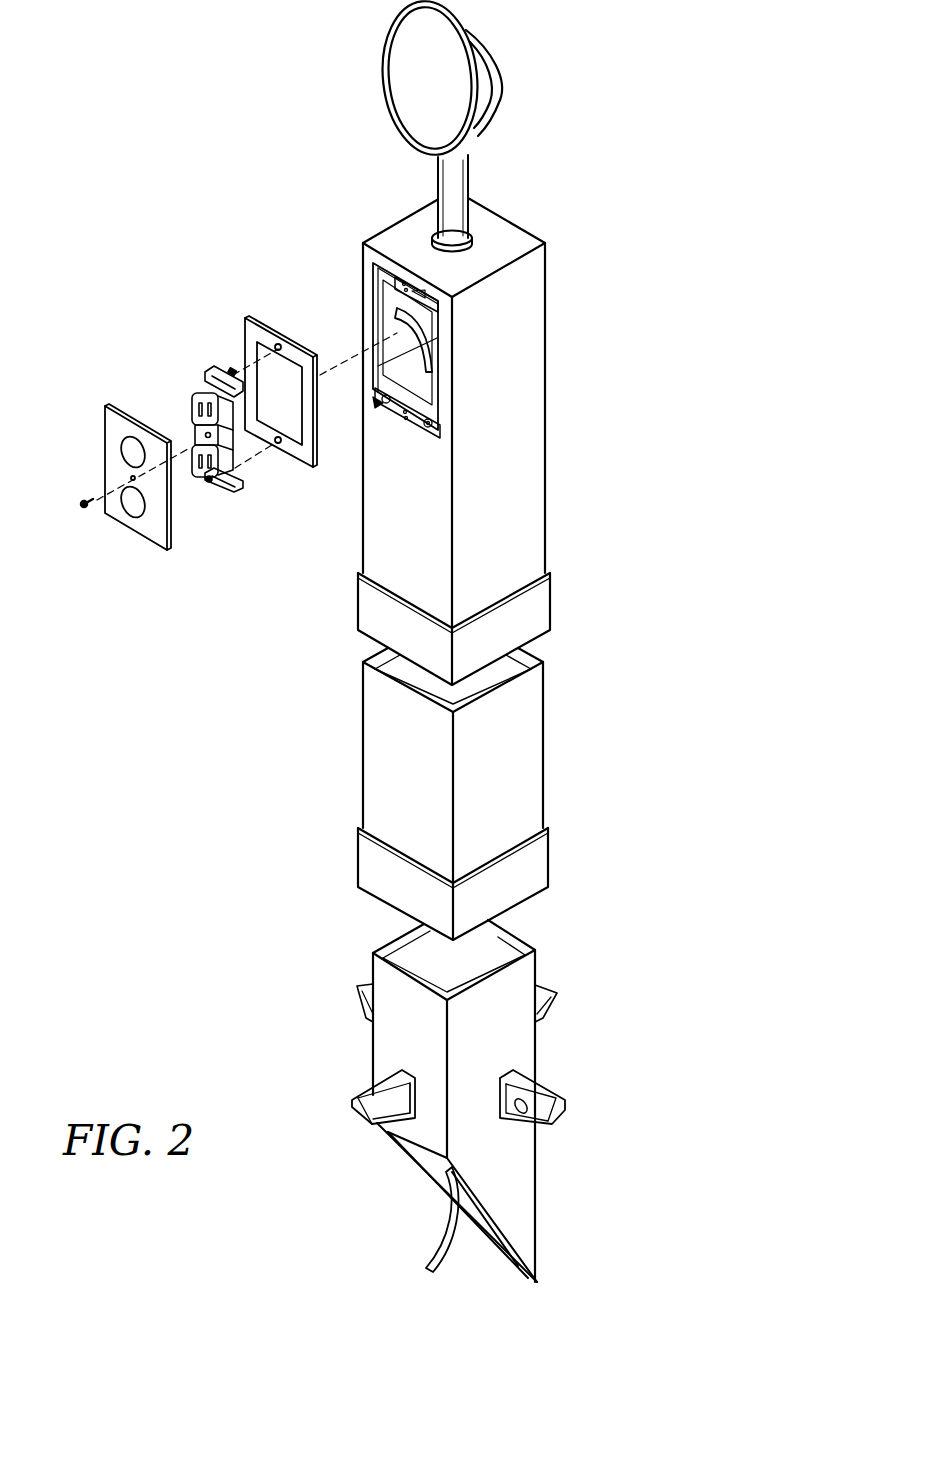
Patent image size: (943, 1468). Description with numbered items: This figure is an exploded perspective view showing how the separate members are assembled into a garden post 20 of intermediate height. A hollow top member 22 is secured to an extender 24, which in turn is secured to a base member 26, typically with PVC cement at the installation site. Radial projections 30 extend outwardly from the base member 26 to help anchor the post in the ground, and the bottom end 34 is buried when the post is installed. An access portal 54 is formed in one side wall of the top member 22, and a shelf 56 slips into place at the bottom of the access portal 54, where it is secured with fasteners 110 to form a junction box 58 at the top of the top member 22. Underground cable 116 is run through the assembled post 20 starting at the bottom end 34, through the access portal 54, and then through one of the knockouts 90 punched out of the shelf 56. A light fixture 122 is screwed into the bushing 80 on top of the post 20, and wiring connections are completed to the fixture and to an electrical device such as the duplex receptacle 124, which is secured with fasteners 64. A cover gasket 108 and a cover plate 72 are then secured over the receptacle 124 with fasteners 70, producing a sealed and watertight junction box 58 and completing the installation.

The garden post 20 is at (226, 666).
The top member 22 is at (533, 376).
The extender 24 is at (537, 762).
The base member 26 is at (528, 1056).
The radial projections 30 is at (567, 1105).
The bottom end 34 is at (537, 1285).
The access portal 54 is at (390, 303).
The shelf 56 is at (415, 390).
The junction box 58 is at (425, 315).
The fasteners 64 is at (208, 388).
The fasteners 70 is at (80, 498).
The cover plate 72 is at (158, 532).
The bushing 80 is at (473, 236).
The knockouts 90 is at (437, 356).
The cover gasket 108 is at (308, 466).
The fasteners 110 is at (424, 433).
The cable 116 is at (400, 326).
The light fixture 122 is at (497, 90).
The duplex receptacle 124 is at (232, 470).